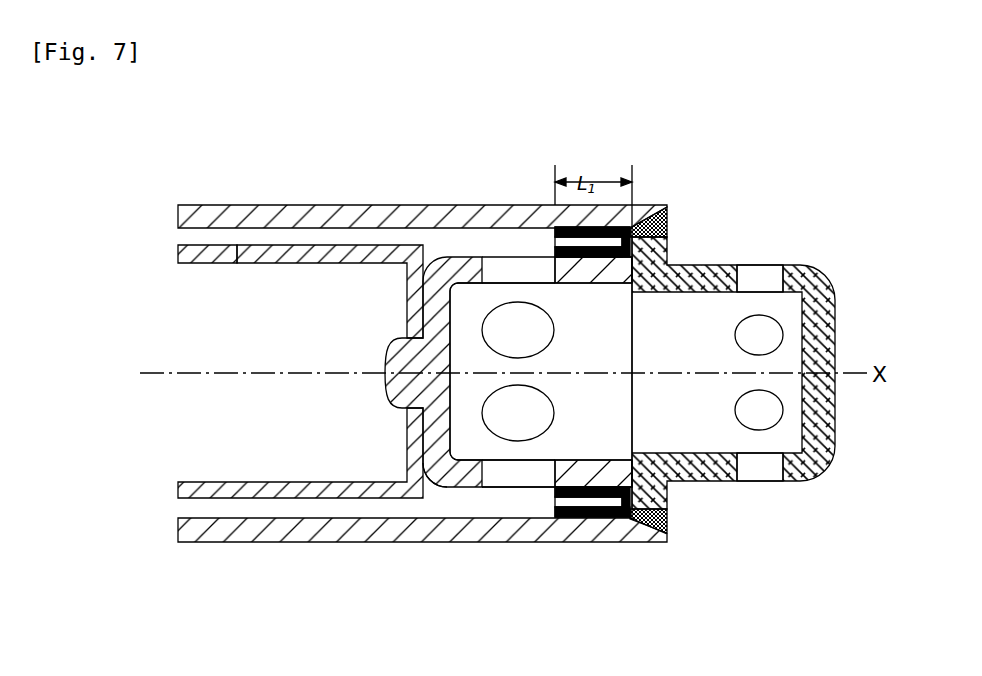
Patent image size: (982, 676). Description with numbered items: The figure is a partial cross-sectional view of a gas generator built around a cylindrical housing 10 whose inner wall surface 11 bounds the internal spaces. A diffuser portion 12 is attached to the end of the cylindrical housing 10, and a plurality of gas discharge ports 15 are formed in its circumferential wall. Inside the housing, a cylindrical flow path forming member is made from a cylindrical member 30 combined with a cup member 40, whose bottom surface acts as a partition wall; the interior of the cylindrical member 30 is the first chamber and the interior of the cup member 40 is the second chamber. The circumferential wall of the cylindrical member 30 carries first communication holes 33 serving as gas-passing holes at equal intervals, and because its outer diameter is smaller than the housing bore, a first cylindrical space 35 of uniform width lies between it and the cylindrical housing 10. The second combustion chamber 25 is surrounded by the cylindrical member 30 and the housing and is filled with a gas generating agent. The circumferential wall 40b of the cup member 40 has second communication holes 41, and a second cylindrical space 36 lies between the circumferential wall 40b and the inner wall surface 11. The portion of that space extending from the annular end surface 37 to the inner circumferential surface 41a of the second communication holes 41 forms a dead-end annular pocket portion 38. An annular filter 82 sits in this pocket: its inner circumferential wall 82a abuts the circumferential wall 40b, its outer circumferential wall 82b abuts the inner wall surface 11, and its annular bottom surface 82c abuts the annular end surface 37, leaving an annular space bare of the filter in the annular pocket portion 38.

The cylindrical housing 10 is at (222, 216).
The inner wall surface 11 is at (375, 230).
The diffuser portion 12 is at (826, 265).
The gas discharge ports 15 is at (761, 277).
The second combustion chamber 25 is at (250, 437).
The cylindrical member 30 is at (301, 265).
The first communication holes 33 is at (217, 258).
The first cylindrical space 35 is at (278, 238).
The second cylindrical space 36 is at (502, 510).
The annular end surface 37 is at (632, 538).
The annular pocket portion 38 is at (640, 214).
The cup member 40 is at (451, 257).
The circumferential wall 40b is at (452, 490).
The second communication holes 41 is at (500, 272).
The inner circumferential surface 41a is at (548, 266).
The annular filter 82 is at (637, 605).
The inner circumferential wall 82a is at (563, 520).
The outer circumferential wall 82b is at (585, 520).
The annular bottom surface 82c is at (606, 521).